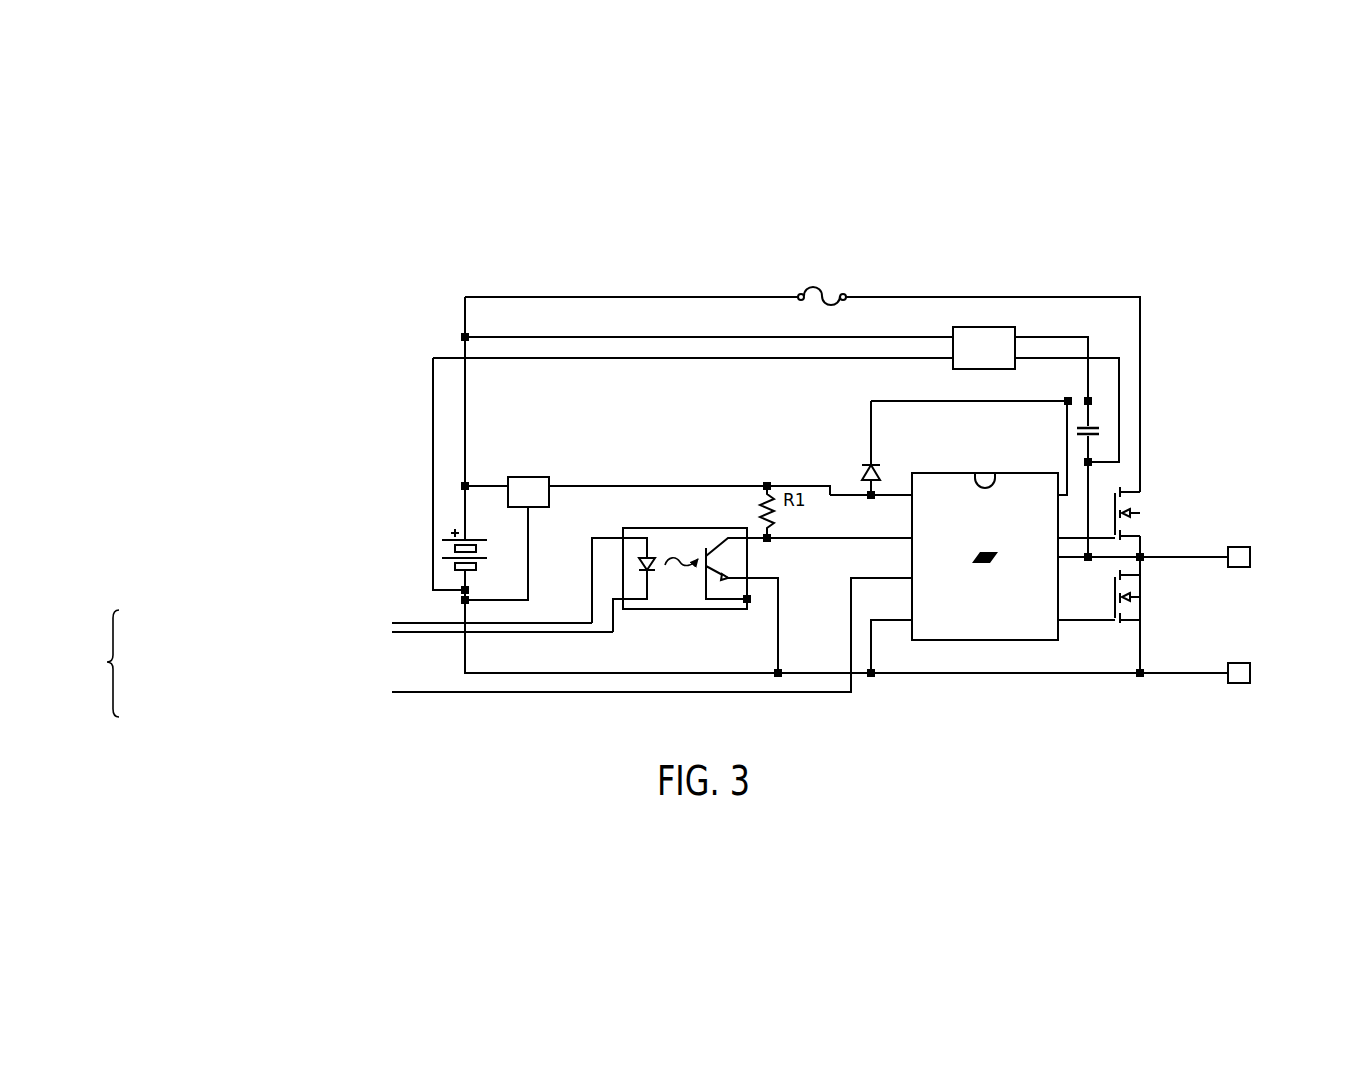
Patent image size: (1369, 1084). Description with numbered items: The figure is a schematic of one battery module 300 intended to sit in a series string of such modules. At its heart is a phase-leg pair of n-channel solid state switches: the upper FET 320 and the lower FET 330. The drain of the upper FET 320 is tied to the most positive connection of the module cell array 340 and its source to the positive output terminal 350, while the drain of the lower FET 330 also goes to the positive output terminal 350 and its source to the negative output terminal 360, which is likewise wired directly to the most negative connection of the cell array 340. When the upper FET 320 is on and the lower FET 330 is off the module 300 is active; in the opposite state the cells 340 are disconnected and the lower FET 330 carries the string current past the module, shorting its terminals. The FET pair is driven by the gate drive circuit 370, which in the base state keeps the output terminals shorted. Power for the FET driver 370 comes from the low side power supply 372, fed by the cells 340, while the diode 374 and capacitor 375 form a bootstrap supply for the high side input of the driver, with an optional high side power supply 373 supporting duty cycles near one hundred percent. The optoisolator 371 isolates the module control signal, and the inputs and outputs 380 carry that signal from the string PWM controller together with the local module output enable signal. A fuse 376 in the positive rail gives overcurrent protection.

The battery module 300 is at (438, 289).
The upper FET M1 320 is at (1186, 498).
The lower FET M2 330 is at (1185, 581).
The module cell array 340 is at (449, 532).
The positive output terminal 350 is at (1249, 530).
The negative output terminal 360 is at (1216, 685).
The gate drive circuit U4 370 is at (962, 652).
The optoisolator U1 371 is at (642, 617).
The power supply U2 372 is at (556, 470).
The power supply U3 373 is at (981, 323).
The diode D1 374 is at (878, 461).
The capacitor C1 375 is at (1102, 430).
The fuse 376 is at (796, 291).
The inputs and outputs 380 is at (227, 664).